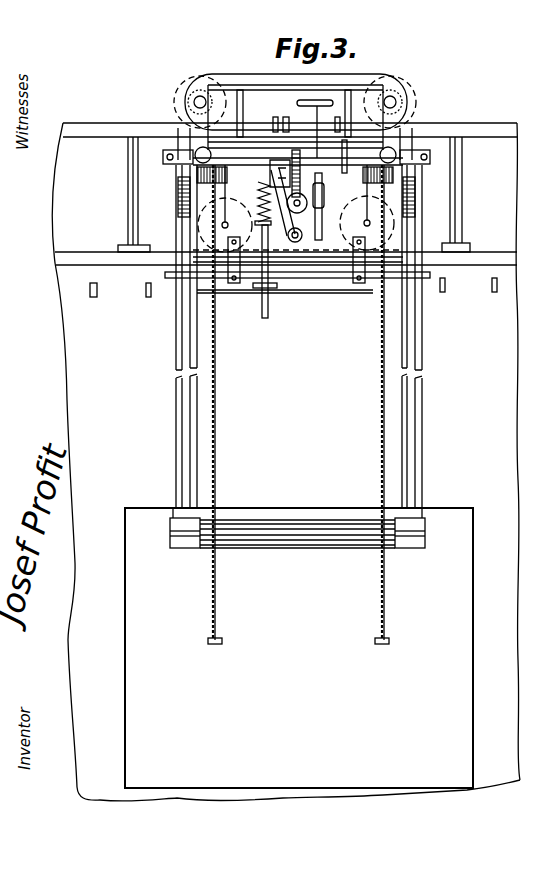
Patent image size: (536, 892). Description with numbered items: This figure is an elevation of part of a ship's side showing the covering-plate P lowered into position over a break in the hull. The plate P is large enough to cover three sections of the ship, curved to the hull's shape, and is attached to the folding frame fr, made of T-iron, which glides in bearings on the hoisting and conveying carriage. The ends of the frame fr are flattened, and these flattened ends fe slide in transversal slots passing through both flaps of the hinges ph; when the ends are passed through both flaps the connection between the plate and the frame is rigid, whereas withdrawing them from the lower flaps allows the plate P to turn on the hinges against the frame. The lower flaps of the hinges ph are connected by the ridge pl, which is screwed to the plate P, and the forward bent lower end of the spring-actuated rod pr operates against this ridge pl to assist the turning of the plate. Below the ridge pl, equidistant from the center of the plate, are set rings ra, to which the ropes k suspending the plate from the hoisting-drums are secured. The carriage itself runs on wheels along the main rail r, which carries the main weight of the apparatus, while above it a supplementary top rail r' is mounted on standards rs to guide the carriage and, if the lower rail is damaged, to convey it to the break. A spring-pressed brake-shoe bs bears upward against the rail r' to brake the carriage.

The supplementary top rail r' is at (290, 116).
The rail r is at (286, 268).
The standards rs is at (130, 192).
The brake-shoe bs is at (93, 297).
The spring-actuated rod pr is at (268, 305).
The folding frame fr is at (178, 463).
The ropes k is at (216, 439).
The covering-plate P is at (299, 648).
The ridge pl is at (337, 542).
The hinges ph is at (182, 542).
The flattened ends fe is at (175, 518).
The rings ra is at (215, 645).